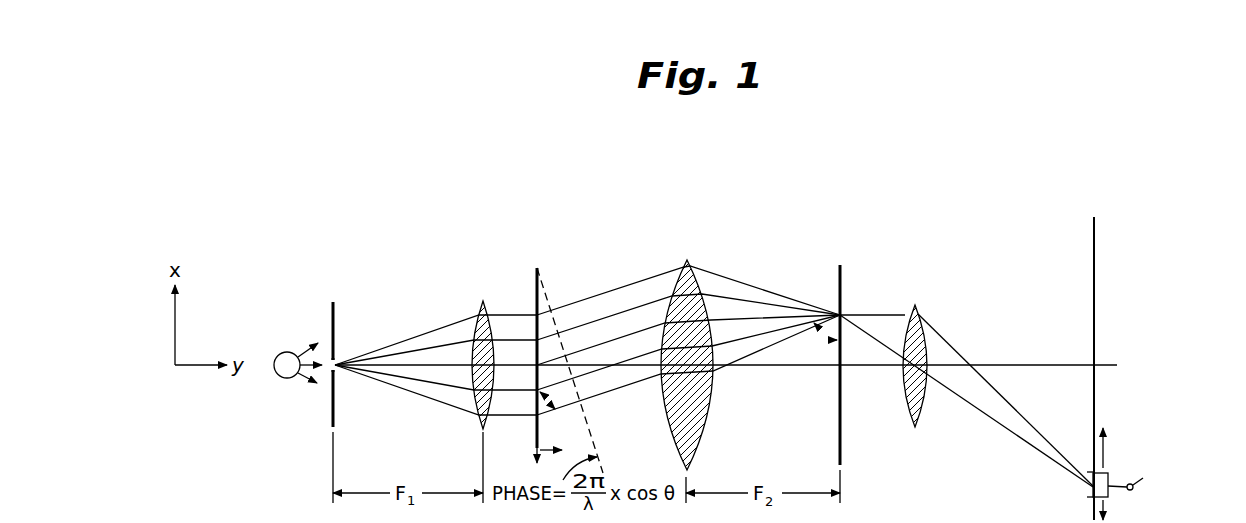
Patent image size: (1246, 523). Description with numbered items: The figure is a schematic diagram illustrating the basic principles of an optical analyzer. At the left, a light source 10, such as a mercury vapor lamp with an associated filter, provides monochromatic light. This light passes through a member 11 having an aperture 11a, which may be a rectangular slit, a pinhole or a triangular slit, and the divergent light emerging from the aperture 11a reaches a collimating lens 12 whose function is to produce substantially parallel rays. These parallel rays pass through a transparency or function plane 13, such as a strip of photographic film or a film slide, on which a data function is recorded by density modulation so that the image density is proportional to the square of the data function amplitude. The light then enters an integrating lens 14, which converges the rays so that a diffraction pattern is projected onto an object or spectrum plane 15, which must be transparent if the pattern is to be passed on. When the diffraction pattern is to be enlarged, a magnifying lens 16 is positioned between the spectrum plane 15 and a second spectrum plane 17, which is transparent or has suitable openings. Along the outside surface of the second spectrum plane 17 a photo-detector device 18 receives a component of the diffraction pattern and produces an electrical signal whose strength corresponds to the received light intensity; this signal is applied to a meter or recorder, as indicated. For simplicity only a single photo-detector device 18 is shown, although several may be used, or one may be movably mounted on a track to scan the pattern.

The light source 10 is at (277, 377).
The member 11 is at (333, 300).
The aperture 11a is at (342, 356).
The collimating lens 12 is at (483, 300).
The function plane 13 is at (538, 268).
The integrating lens 14 is at (688, 260).
The spectrum plane 15 is at (840, 265).
The magnifying lens 16 is at (917, 305).
The second spectrum plane 17 is at (1094, 217).
The photo-detector device 18 is at (1110, 495).